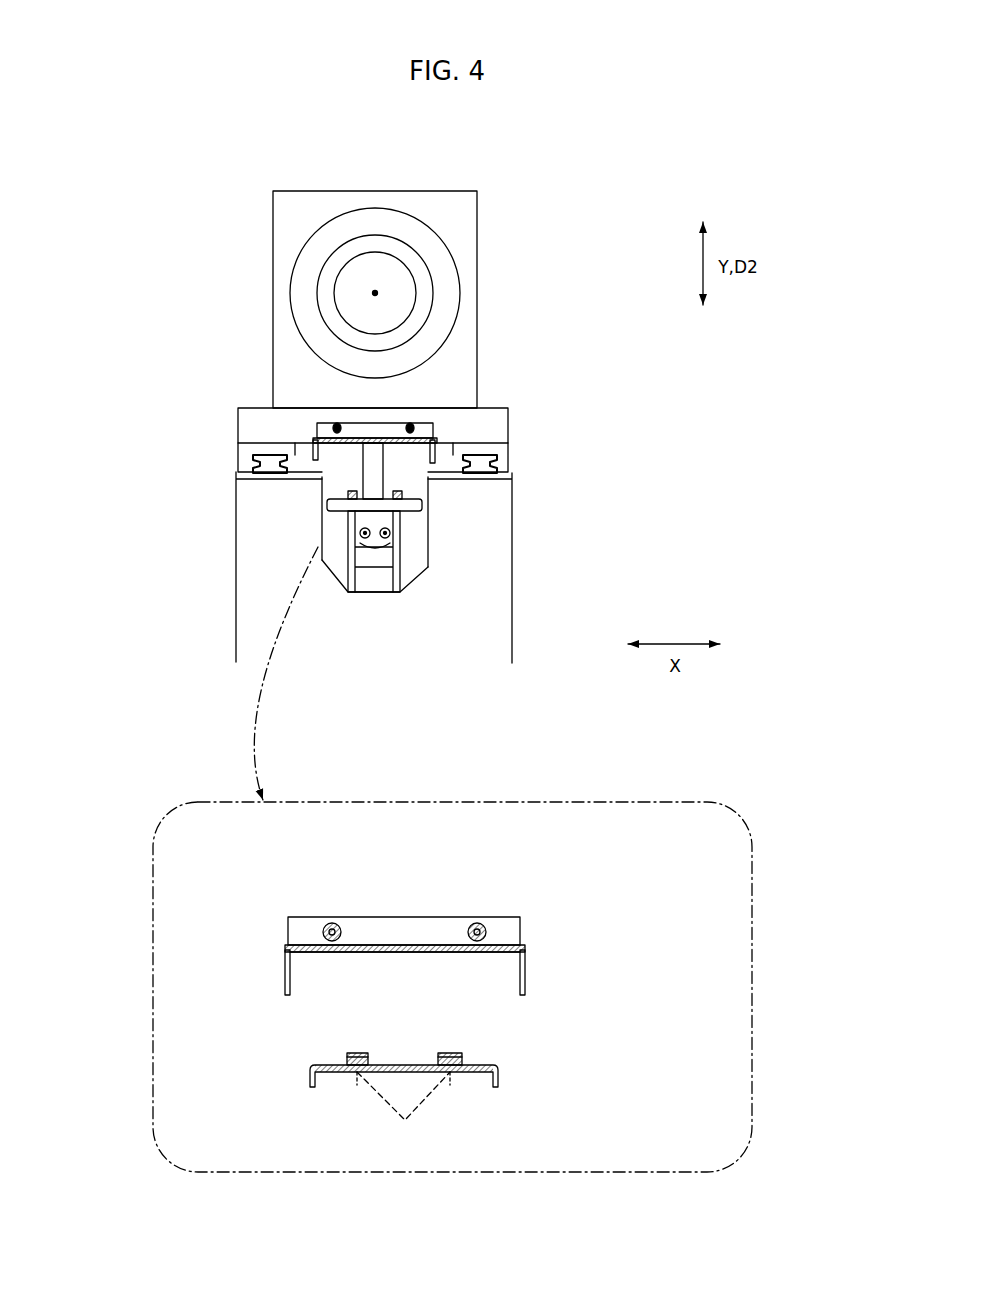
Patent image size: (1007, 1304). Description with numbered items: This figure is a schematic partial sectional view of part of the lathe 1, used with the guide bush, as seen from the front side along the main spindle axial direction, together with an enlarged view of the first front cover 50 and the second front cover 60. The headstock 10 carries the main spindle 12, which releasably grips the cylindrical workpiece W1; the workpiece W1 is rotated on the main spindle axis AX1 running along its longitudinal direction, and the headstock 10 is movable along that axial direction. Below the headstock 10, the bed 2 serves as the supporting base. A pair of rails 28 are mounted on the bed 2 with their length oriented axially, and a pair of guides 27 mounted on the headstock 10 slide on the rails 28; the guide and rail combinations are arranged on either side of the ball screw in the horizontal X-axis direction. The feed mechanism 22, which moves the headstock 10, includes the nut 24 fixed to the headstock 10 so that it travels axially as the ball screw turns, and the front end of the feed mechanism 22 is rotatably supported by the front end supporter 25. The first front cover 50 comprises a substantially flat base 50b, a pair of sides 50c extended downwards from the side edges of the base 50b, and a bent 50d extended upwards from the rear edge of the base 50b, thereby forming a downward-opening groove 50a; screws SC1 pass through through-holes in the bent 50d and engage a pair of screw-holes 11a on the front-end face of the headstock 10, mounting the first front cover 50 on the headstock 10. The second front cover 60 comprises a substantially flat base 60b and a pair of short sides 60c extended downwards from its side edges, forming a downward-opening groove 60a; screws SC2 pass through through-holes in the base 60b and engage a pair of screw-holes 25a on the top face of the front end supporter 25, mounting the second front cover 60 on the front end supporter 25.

The lathe 1 is at (278, 156).
The bed 2 is at (512, 607).
The headstock 10 is at (481, 232).
The screw-holes 11a is at (330, 917).
The main spindle 12 is at (417, 250).
The feed mechanism 22 is at (383, 585).
The nut 24 is at (380, 553).
The front end supporter 25 is at (401, 797).
The screw-holes 25a is at (403, 1111).
The guides 27 is at (238, 458).
The rails 28 is at (267, 452).
The first front cover 50 is at (423, 634).
The groove 50a is at (340, 487).
The base 50b is at (437, 441).
The sides 50c is at (317, 450).
The bent 50d is at (425, 423).
The second front cover 60 is at (387, 814).
The groove 60a is at (332, 523).
The base 60b is at (405, 494).
The short sides 60c is at (322, 522).
The workpiece W1 is at (367, 255).
The main spindle axis AX1 is at (375, 293).
The screws SC1 is at (410, 424).
The screws SC2 is at (352, 492).